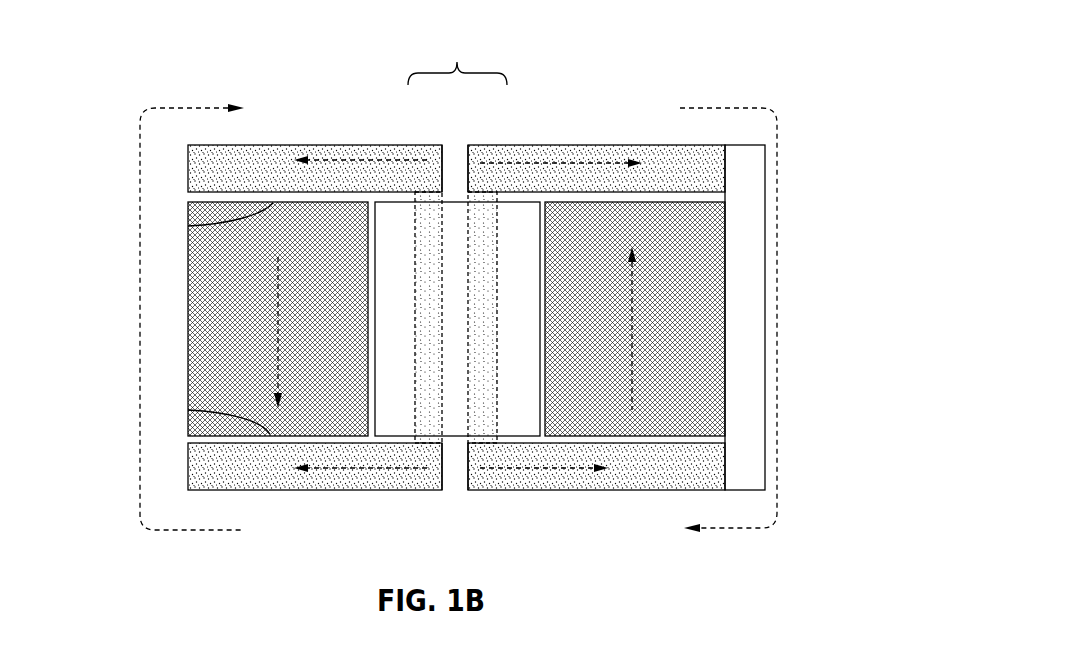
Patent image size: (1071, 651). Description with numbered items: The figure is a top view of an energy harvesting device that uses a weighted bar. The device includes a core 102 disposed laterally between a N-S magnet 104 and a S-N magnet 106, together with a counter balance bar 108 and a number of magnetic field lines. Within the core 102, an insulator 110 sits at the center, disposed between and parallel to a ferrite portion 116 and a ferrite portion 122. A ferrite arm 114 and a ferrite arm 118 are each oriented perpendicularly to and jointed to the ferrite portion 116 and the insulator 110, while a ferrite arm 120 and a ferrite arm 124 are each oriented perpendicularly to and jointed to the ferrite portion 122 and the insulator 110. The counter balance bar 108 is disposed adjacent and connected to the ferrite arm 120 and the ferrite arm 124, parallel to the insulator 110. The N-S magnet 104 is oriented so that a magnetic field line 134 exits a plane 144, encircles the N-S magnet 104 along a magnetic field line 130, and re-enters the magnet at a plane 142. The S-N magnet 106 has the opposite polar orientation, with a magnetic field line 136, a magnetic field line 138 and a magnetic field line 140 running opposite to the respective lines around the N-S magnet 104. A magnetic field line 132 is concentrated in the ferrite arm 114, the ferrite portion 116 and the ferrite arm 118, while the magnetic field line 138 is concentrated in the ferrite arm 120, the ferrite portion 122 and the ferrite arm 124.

The core 102 is at (457, 57).
The N-S magnet 104 is at (345, 236).
The S-N magnet 106 is at (598, 234).
The counter balance bar 108 is at (740, 337).
The insulator 110 is at (455, 157).
The ferrite arm 114 is at (238, 182).
The ferrite portion 116 is at (423, 348).
The ferrite arm 118 is at (245, 482).
The ferrite arm 120 is at (703, 181).
The ferrite portion 122 is at (488, 352).
The ferrite arm 124 is at (710, 483).
The magnetic field line 130 is at (200, 100).
The magnetic field line 132 is at (357, 162).
The magnetic field line 134 is at (278, 325).
The magnetic field line 136 is at (693, 106).
The magnetic field line 138 is at (578, 165).
The magnetic field line 140 is at (632, 325).
The plane 142 is at (188, 226).
The plane 144 is at (188, 410).